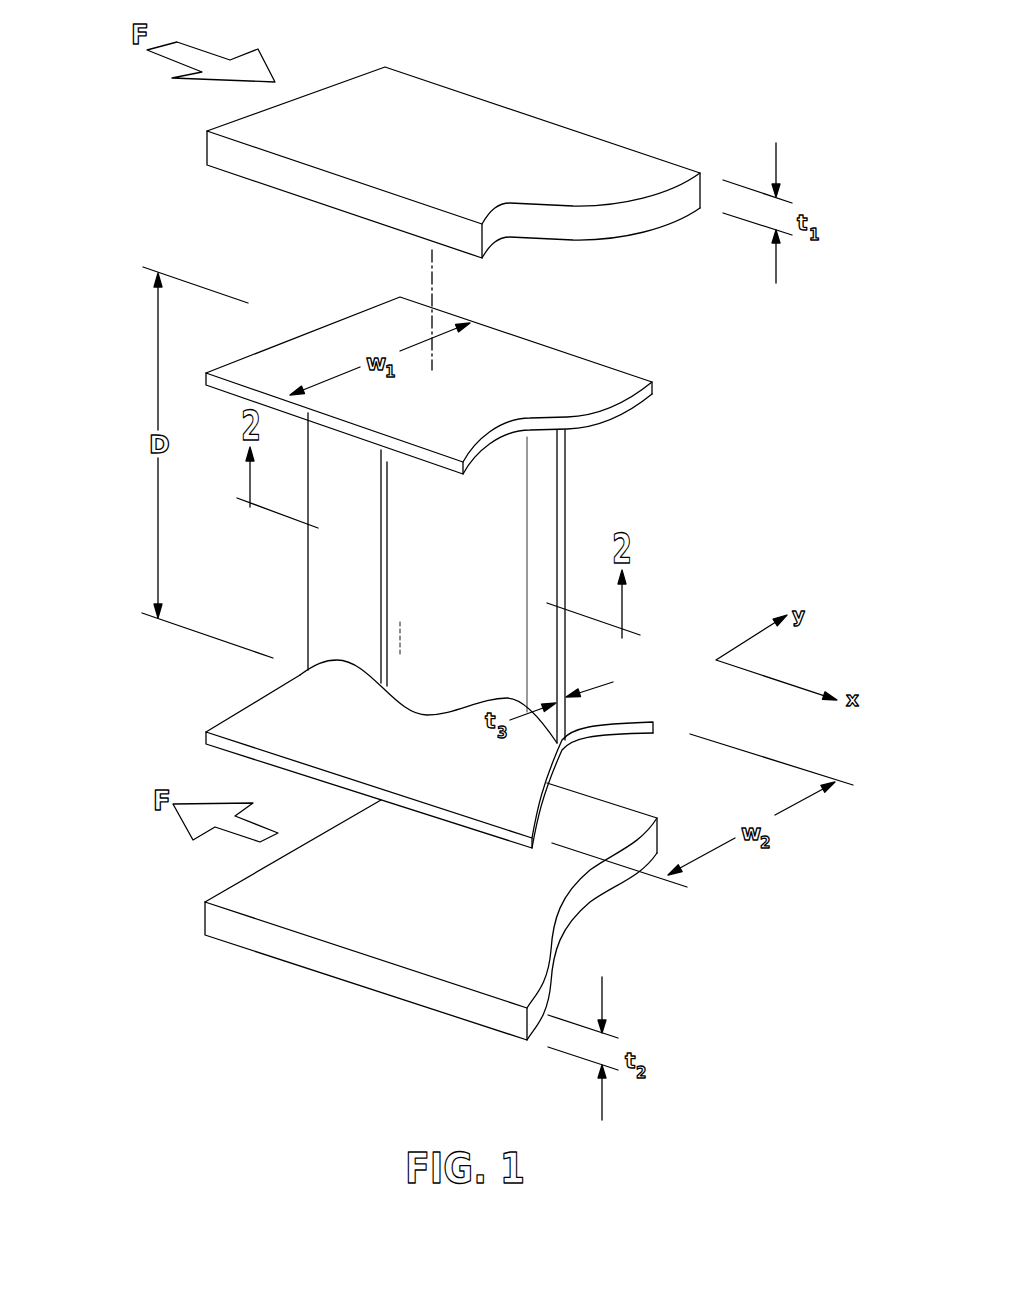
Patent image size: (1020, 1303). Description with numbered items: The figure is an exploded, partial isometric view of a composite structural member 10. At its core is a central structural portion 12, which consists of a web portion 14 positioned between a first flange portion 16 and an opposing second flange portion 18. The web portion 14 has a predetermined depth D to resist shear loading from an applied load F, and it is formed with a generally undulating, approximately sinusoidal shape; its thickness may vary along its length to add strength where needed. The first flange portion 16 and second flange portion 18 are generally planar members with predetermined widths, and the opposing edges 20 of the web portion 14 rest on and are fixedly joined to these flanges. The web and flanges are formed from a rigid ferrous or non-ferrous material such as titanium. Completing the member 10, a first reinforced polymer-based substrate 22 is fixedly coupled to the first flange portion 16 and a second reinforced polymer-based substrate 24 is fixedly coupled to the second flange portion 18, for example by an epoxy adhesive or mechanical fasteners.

The composite structural member 10 is at (782, 67).
The central structural portion 12 is at (617, 495).
The web portion 14 is at (308, 598).
The first flange portion 16 is at (340, 322).
The second flange portion 18 is at (245, 706).
The opposing edges 20 is at (542, 450).
The first reinforced polymer-based substrate 22 is at (220, 151).
The second reinforced polymer-based substrate 24 is at (221, 922).